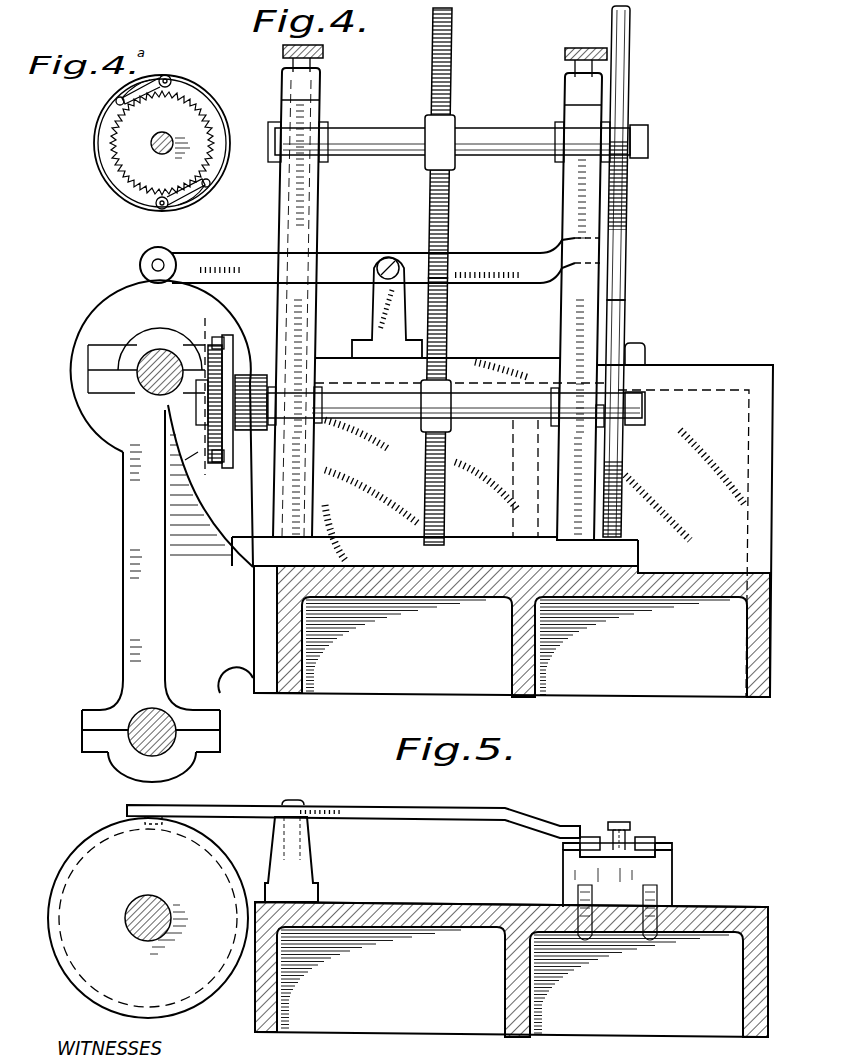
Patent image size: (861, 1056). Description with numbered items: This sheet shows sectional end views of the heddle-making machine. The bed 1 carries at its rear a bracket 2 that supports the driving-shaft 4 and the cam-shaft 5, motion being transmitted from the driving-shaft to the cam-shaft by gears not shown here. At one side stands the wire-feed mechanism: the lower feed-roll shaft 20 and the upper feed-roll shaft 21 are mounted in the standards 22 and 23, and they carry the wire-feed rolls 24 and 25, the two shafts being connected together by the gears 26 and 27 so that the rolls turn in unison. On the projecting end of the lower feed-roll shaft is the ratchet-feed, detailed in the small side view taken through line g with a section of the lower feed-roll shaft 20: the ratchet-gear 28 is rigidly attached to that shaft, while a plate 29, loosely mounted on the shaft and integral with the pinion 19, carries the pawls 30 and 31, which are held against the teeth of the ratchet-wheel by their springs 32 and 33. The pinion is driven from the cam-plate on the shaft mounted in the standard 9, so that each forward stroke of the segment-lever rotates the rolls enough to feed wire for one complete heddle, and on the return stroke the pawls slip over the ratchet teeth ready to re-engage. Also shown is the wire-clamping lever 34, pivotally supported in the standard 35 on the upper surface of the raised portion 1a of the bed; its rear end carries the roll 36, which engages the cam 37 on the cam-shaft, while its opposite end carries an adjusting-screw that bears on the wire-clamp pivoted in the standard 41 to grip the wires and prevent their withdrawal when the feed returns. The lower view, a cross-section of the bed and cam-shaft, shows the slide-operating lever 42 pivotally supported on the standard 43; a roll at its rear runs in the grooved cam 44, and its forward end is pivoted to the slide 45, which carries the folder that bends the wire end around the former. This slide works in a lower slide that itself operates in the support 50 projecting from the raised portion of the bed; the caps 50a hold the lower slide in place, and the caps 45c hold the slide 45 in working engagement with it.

In FIG. 4, the bed 1 is at (748, 627).
In FIG. 4, the raised portion of the bed 1a is at (738, 366).
In FIG. 5, the raised portion of the bed 1a is at (760, 909).
In FIG. 4, the bracket 2 is at (176, 557).
In FIG. 4, the driving-shaft 4 is at (140, 753).
In FIG. 4, the cam-shaft 5 is at (150, 392).
In FIG. 5, the cam-shaft 5 is at (126, 910).
In FIG. 4, the standard 9 is at (196, 404).
In FIG. 4, the pinion 19 is at (256, 428).
In FIG. 4, the lower feed-roll shaft 20 is at (456, 407).
In FIG. 4A, the lower feed-roll shaft 20 is at (152, 142).
In FIG. 4, the upper feed-roll shaft 21 is at (458, 142).
In FIG. 4, the standard 22 is at (298, 291).
In FIG. 4, the standard 23 is at (582, 294).
In FIG. 4, the wire-feed roll 24 is at (628, 318).
In FIG. 4, the wire-feed roll 25 is at (630, 90).
In FIG. 4, the gear 26 is at (447, 457).
In FIG. 4, the gear 27 is at (452, 95).
In FIG. 4A, the ratchet-gear 28 is at (162, 143).
In FIG. 4, the plate 29 is at (230, 462).
In FIG. 4A, the plate 29 is at (230, 140).
In FIG. 4, the pawl 30 is at (220, 337).
In FIG. 4A, the pawl 30 is at (167, 75).
In FIG. 4, the pawl 31 is at (218, 465).
In FIG. 4A, the pawl 31 is at (163, 210).
In FIG. 4A, the spring 32 is at (200, 195).
In FIG. 4A, the spring 33 is at (120, 87).
In FIG. 4, the lever 34 is at (372, 264).
In FIG. 4, the standard 35 is at (387, 308).
In FIG. 4, the roll 36 is at (140, 259).
In FIG. 4, the cam 37 is at (162, 423).
In FIG. 4, the standard 41 is at (646, 353).
In FIG. 5, the lever 42 is at (358, 815).
In FIG. 5, the standard 43 is at (291, 851).
In FIG. 5, the grooved cam 44 is at (135, 874).
In FIG. 5, the slide 45 is at (635, 840).
In FIG. 5, the caps 45c is at (674, 826).
In FIG. 5, the support 50 is at (562, 879).
In FIG. 5, the caps 50a is at (690, 848).